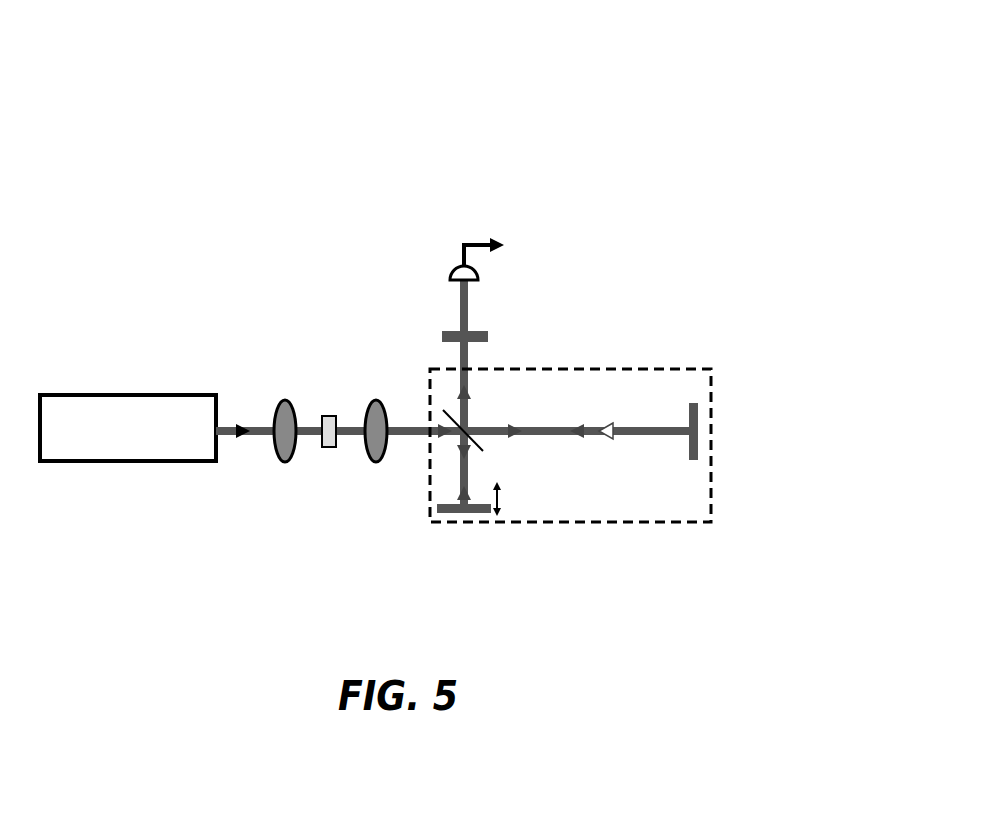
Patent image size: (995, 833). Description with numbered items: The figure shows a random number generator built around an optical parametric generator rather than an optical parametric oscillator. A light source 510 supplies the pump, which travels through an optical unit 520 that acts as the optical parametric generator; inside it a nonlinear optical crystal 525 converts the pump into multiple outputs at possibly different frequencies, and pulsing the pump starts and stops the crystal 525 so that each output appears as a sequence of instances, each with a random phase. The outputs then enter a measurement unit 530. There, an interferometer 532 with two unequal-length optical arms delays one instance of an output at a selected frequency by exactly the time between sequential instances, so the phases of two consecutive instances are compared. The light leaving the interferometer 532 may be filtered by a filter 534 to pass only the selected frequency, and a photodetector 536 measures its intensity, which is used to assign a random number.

The light source 510 is at (228, 200).
The optical unit 520 is at (392, 200).
The nonlinear optical crystal 525 is at (334, 497).
The measurement unit 530 is at (723, 200).
The interferometer 532 is at (593, 528).
The filter 534 is at (554, 325).
The photodetector 536 is at (495, 273).